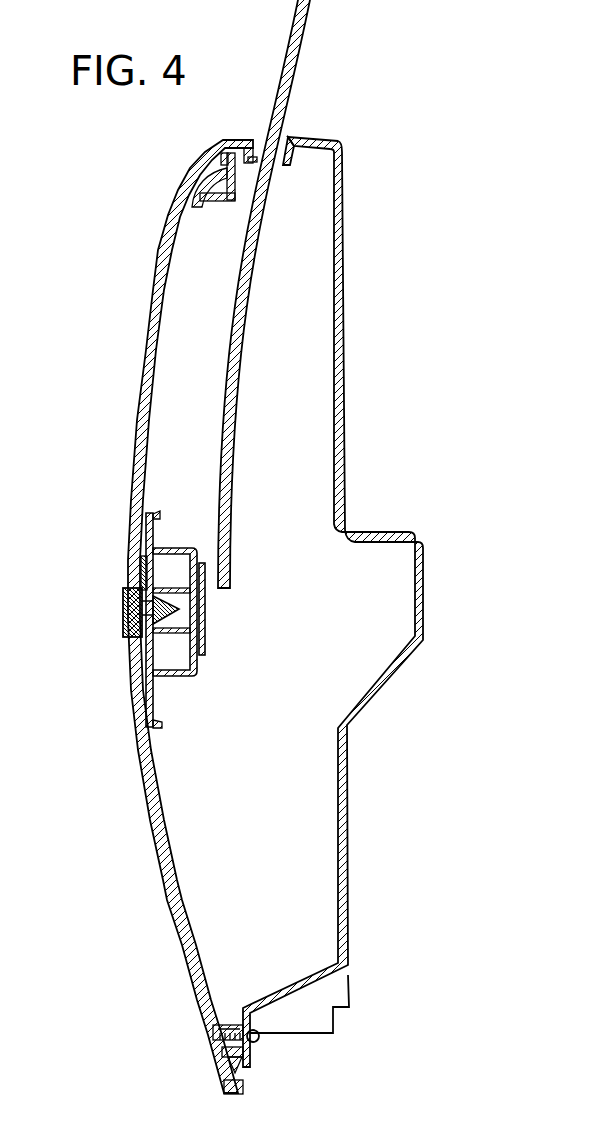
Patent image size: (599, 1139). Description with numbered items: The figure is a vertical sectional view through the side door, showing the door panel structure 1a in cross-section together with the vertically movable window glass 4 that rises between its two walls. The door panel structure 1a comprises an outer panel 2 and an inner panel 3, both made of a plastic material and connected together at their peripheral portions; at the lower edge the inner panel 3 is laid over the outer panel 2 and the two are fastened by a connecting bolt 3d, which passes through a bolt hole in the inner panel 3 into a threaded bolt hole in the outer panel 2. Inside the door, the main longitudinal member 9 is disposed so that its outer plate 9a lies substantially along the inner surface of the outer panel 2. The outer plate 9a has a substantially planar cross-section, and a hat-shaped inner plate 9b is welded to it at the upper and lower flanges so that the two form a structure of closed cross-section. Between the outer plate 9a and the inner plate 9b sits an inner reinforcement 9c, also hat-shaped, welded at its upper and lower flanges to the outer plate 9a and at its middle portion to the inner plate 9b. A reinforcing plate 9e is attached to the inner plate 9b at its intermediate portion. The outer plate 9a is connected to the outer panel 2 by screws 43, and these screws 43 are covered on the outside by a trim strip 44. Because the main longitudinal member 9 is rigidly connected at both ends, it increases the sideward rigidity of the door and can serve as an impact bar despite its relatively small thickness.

The door panel structure 1a is at (349, 161).
The outer panel 2 is at (157, 258).
The inner panel 3 is at (343, 247).
The connecting bolt 3d is at (259, 1038).
The window glass 4 is at (300, 66).
The main longitudinal member 9 is at (178, 619).
The outer plate 9a is at (145, 567).
The inner plate 9b is at (165, 548).
The inner reinforcement 9c is at (177, 634).
The reinforcing plate 9e is at (204, 646).
The screw 43 is at (146, 640).
The trim strip 44 is at (124, 600).